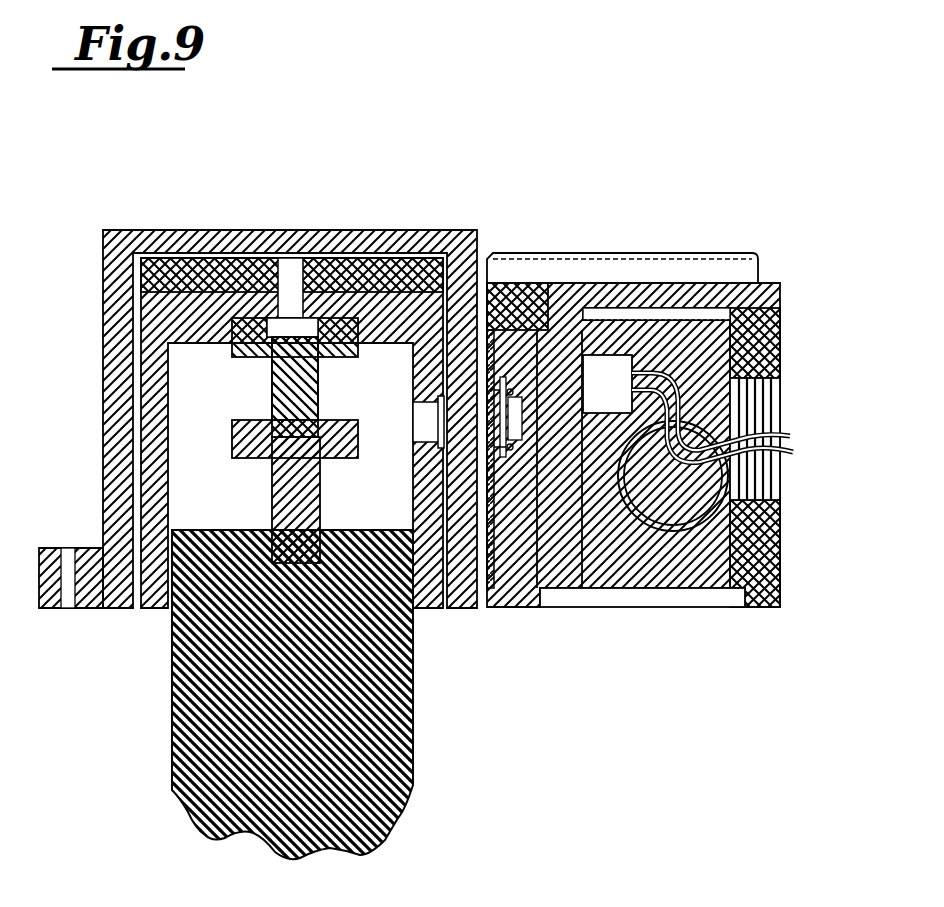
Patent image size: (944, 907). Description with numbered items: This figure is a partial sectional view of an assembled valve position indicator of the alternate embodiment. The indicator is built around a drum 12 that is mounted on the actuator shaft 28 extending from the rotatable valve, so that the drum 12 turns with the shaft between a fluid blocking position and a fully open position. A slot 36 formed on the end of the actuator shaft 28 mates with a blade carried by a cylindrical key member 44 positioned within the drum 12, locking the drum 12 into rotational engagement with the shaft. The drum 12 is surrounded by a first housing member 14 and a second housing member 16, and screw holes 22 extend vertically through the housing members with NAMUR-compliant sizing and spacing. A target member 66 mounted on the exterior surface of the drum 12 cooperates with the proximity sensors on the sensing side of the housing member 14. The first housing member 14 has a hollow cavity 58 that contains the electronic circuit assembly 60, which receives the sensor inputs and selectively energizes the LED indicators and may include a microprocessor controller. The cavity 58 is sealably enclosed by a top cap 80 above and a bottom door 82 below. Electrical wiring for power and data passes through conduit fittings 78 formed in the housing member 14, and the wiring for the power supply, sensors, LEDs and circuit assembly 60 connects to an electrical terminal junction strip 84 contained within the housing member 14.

The drum 12 is at (150, 300).
The first housing member 14 is at (783, 368).
The second housing member 16 is at (103, 368).
The screw holes 22 is at (68, 596).
The actuator shaft 28 is at (186, 716).
The slot 36 is at (322, 530).
The cylindrical key member 44 is at (232, 348).
The hollow cavity 58 is at (708, 572).
The electronic circuit assembly 60 is at (514, 420).
The target member 66 is at (418, 422).
The conduit fittings 78 is at (650, 528).
The top cap 80 is at (622, 283).
The bottom door 82 is at (656, 598).
The electrical terminal junction strip 84 is at (612, 370).